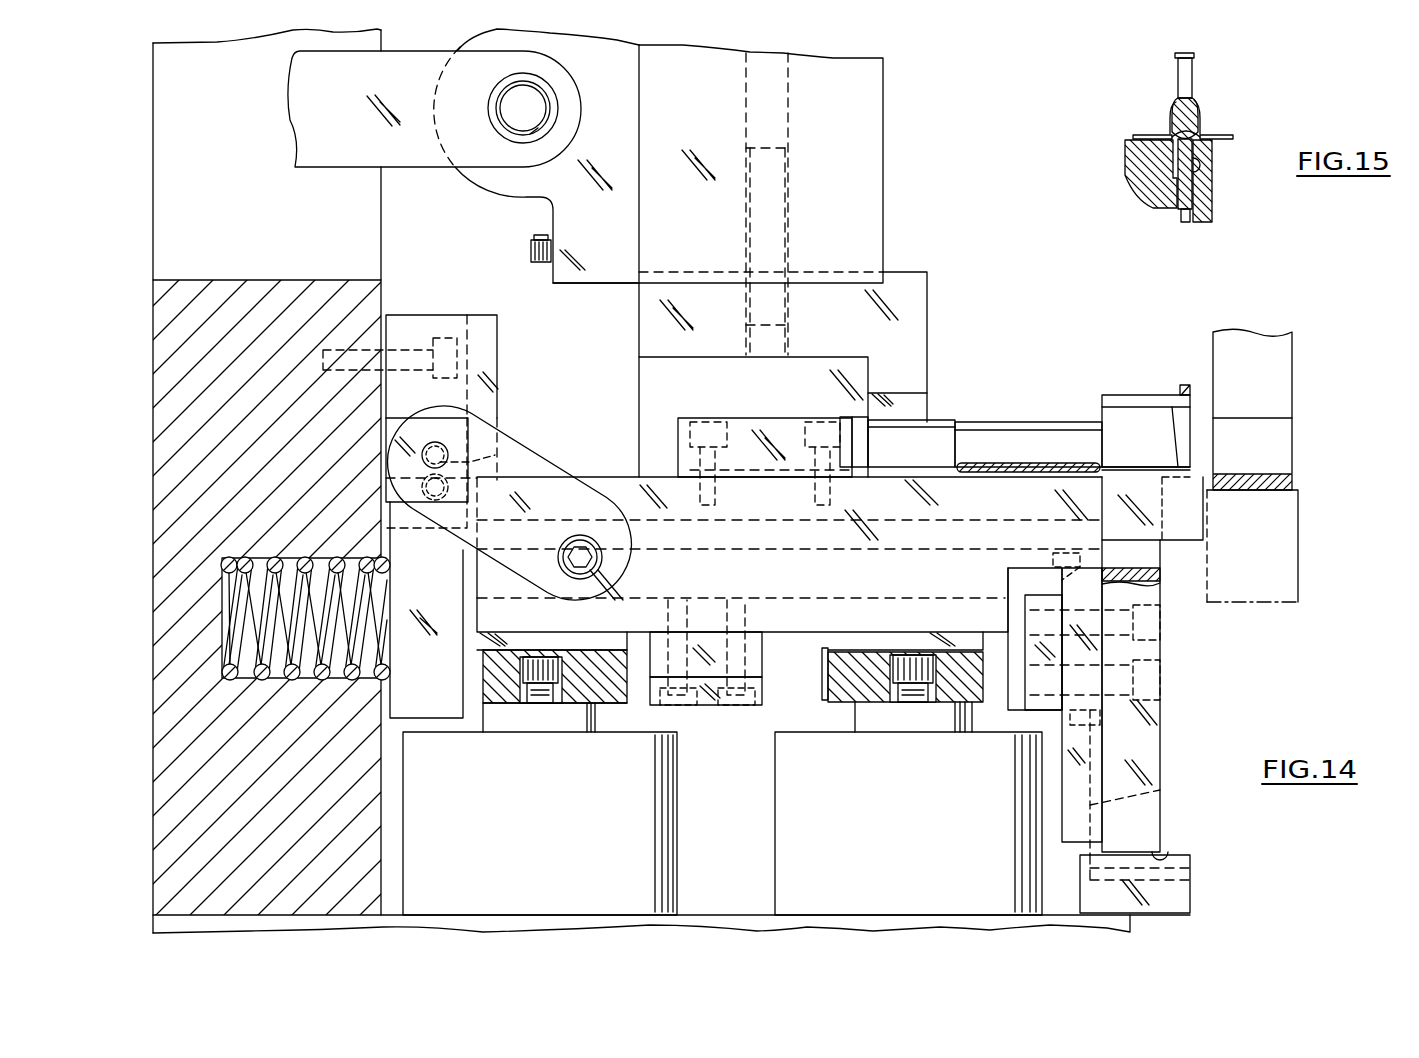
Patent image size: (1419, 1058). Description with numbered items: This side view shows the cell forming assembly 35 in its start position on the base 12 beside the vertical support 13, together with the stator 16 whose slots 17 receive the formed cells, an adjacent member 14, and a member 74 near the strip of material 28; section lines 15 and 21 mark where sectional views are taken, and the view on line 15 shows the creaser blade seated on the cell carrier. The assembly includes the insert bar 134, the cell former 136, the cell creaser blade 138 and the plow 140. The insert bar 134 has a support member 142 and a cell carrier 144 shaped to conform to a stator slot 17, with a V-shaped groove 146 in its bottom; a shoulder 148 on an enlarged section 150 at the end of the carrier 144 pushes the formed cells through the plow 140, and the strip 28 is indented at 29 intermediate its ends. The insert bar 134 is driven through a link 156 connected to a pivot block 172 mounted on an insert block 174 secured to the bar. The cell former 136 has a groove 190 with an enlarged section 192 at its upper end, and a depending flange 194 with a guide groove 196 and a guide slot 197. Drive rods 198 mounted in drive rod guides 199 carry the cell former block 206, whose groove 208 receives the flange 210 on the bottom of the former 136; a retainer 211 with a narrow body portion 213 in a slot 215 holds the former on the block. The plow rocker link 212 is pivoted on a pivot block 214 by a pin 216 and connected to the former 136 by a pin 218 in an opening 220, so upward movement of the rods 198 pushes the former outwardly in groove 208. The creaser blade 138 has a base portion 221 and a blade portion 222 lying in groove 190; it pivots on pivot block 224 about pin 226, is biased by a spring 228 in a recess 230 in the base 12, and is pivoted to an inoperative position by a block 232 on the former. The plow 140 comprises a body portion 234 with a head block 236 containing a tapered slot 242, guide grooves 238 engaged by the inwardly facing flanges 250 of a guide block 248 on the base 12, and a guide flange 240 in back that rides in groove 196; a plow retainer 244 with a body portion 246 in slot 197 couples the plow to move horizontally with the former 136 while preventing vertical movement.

In FIG. 14, the base 12 is at (725, 915).
In FIG. 14, the vertical support 13 is at (150, 464).
In FIG. 14, the workpiece holder 14 is at (1300, 545).
In FIG. 14, the section line 15— 15 is at (1023, 366).
In FIG. 14, the stator 16 is at (1290, 366).
In FIG. 14, the slots 17 is at (1286, 474).
In FIG. 14, the section line 21- 21 is at (690, 384).
In FIG. 14, the strip of material 28 is at (1000, 463).
In FIG. 15, the strip of material 28 is at (1233, 138).
In FIG. 15, the indentation 29 is at (1175, 116).
In FIG. 14, the cell forming assembly 35 is at (1060, 380).
In FIG. 14, the contact strip 74 is at (965, 472).
In FIG. 14, the insert bar 134 is at (932, 406).
In FIG. 15, the insert bar 134 is at (1218, 82).
In FIG. 14, the cell former 136 is at (588, 466).
In FIG. 15, the cell former 136 is at (1226, 201).
In FIG. 14, the cell creaser blade 138 is at (1184, 558).
In FIG. 15, the cell creaser blade 138 is at (1181, 218).
In FIG. 14, the plow 140 is at (1119, 380).
In FIG. 14, the support member 142 is at (930, 285).
In FIG. 14, the cell carrier 144 is at (1020, 421).
In FIG. 15, the cell carrier 144 is at (1195, 112).
In FIG. 15, the V-shaped groove 146 is at (1165, 136).
In FIG. 14, the shoulder 148 is at (958, 432).
In FIG. 15, the shoulder 148 is at (1202, 121).
In FIG. 14, the enlarged section 150 is at (893, 460).
In FIG. 14, the link 156 is at (335, 168).
In FIG. 14, the pivot block 172 is at (500, 185).
In FIG. 14, the insert block 174 is at (884, 102).
In FIG. 14, the groove 190 is at (835, 597).
In FIG. 15, the groove 190 is at (1187, 225).
In FIG. 14, the enlarged section 192 is at (883, 518).
In FIG. 15, the enlarged section 192 is at (1203, 168).
In FIG. 14, the depending flange 194 is at (1070, 740).
In FIG. 14, the guide groove 196 is at (1150, 795).
In FIG. 14, the guide slot 197 is at (1060, 577).
In FIG. 14, the drive rods 198 is at (598, 720).
In FIG. 14, the drive rod guides 199 is at (583, 848).
In FIG. 14, the cell former block 206 is at (830, 702).
In FIG. 14, the groove 208 is at (478, 645).
In FIG. 14, the flange 210 is at (813, 650).
In FIG. 14, the retainer 211 is at (754, 706).
In FIG. 14, the plow rocker link 212 is at (515, 440).
In FIG. 14, the narrow body portion 213 is at (752, 640).
In FIG. 14, the pivot block 214 is at (419, 503).
In FIG. 14, the slot 215 is at (826, 650).
In FIG. 14, the pin 216 is at (392, 481).
In FIG. 14, the pin 218 is at (603, 558).
In FIG. 14, the opening 220 is at (558, 562).
In FIG. 14, the base portion 221 is at (498, 345).
In FIG. 14, the blade portion 222 is at (648, 477).
In FIG. 14, the pivot block 224 is at (470, 345).
In FIG. 14, the pin 226 is at (500, 453).
In FIG. 14, the spring 228 is at (277, 560).
In FIG. 14, the recess 230 is at (277, 680).
In FIG. 14, the block 232 is at (765, 418).
In FIG. 14, the body portion 234 is at (1162, 720).
In FIG. 14, the head block 236 is at (1164, 400).
In FIG. 14, the guide grooves 238 is at (1160, 852).
In FIG. 14, the guide flange 240 is at (1090, 845).
In FIG. 14, the tapered slot 242 is at (1173, 434).
In FIG. 14, the plow retainer 244 is at (1010, 708).
In FIG. 14, the body portion 246 is at (1092, 723).
In FIG. 14, the guide block 248 is at (1192, 860).
In FIG. 14, the inwardly facing flanges 250 is at (1192, 872).